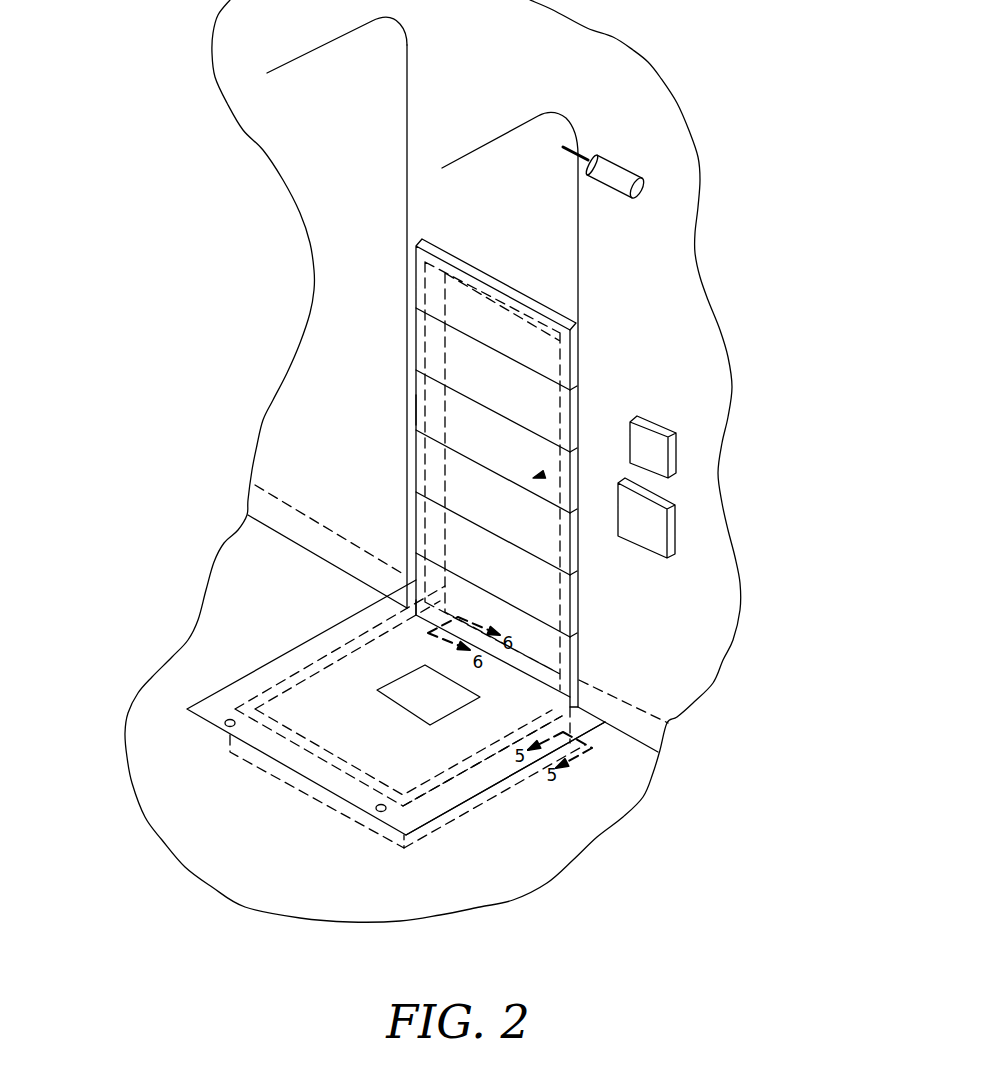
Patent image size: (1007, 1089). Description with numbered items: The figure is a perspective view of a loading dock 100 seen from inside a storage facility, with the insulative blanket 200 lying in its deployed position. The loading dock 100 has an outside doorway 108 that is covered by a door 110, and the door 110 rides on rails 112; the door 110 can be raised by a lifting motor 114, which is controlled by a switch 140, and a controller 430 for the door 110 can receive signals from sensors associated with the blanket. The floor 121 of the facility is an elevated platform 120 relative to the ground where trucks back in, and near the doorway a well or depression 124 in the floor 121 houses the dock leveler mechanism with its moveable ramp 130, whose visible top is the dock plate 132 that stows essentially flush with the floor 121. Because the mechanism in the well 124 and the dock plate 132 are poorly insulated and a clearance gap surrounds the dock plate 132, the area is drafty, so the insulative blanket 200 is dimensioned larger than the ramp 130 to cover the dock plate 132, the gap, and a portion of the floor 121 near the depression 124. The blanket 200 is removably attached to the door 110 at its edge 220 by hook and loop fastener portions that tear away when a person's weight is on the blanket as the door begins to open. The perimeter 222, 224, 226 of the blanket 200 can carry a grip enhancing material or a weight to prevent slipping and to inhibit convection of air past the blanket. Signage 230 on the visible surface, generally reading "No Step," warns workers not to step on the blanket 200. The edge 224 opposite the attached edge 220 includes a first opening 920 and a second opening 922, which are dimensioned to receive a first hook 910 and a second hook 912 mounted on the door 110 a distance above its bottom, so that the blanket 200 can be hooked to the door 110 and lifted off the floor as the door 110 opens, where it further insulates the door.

The loading dock 100 is at (153, 466).
The outside doorway 108 is at (430, 301).
The door 110 is at (465, 368).
The rails 112 is at (579, 265).
The lifting motor 114 is at (627, 167).
The elevated platform 120 is at (632, 712).
The floor 121 is at (282, 581).
The well or depression 124 is at (282, 771).
The ramp 130 is at (447, 733).
The dock plate 132 is at (413, 768).
The switch 140 is at (635, 533).
The insulative blanket 200 is at (352, 628).
The edge of the insulative blanket 220 is at (443, 617).
The perimeter 222 is at (273, 674).
The perimeter 224 is at (350, 790).
The perimeter 226 is at (457, 792).
The signage 230 is at (444, 704).
The controller 430 is at (648, 437).
The first hook 910 is at (417, 412).
The second hook 912 is at (544, 475).
The first opening 920 is at (230, 718).
The second opening 922 is at (383, 800).